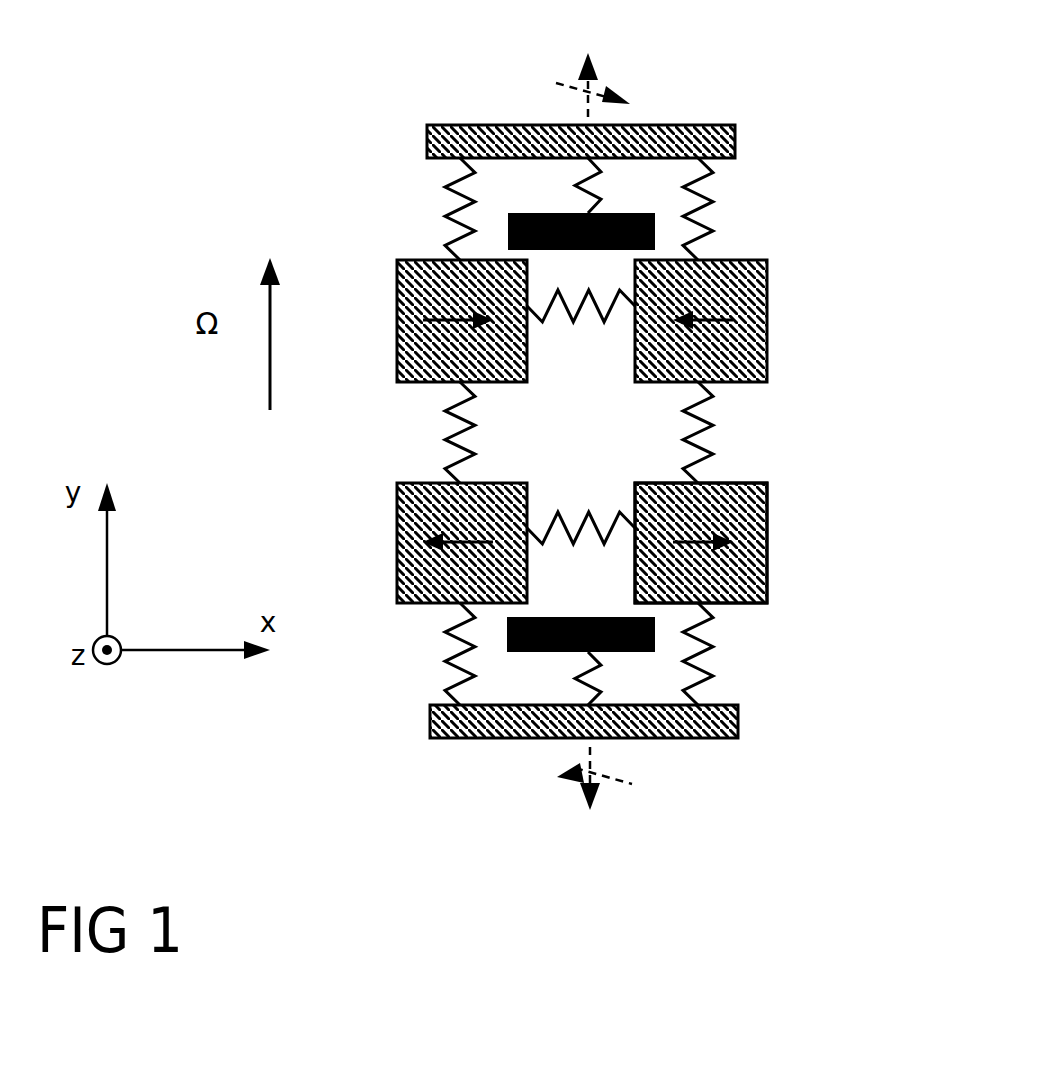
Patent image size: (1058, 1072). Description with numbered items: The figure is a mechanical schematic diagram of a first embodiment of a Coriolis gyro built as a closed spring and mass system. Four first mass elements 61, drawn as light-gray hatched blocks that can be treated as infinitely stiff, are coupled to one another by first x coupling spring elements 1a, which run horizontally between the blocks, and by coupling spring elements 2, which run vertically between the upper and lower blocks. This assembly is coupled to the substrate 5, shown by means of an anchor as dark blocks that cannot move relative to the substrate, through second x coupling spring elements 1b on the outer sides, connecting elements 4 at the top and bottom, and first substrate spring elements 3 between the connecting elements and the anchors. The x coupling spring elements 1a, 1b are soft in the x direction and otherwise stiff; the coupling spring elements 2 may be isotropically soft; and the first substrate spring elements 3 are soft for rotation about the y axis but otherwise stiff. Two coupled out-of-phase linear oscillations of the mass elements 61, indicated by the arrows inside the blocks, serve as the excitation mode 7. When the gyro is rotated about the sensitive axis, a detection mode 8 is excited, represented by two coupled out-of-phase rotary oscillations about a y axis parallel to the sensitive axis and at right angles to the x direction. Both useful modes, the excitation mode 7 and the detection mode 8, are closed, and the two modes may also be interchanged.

The first x coupling spring element 1a is at (590, 322).
The second x coupling spring element 1b is at (450, 215).
The coupling spring element 2 is at (452, 440).
The first substrate spring element 3 is at (562, 160).
The connecting element 4 is at (735, 140).
The substrate 5 is at (617, 652).
The excitation mode 7 is at (398, 285).
The detection mode 8 is at (594, 429).
The first mass element 61 is at (767, 503).